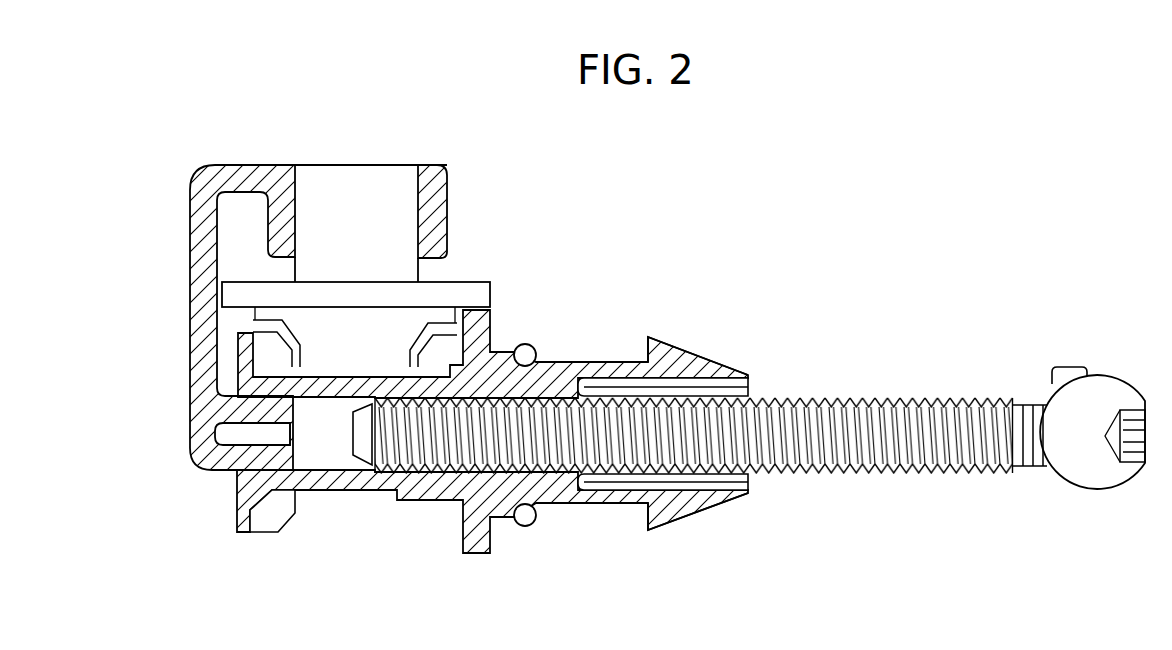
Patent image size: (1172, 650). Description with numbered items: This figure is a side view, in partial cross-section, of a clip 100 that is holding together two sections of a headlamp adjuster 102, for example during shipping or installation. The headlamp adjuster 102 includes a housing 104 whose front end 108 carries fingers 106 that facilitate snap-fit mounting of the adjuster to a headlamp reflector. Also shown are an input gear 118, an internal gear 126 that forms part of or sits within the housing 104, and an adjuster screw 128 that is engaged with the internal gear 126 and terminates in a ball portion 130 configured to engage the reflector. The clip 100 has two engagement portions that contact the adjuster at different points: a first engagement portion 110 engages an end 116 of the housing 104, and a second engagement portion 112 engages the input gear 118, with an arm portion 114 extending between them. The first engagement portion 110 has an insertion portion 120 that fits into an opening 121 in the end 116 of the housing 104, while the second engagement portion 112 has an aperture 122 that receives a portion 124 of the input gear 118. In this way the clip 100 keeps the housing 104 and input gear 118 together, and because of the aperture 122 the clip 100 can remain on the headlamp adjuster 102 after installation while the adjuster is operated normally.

The clip 100 is at (182, 204).
The headlamp adjuster 102 is at (599, 337).
The housing 104 is at (614, 526).
The fingers 106 is at (691, 356).
The front end 108 is at (750, 372).
The first engagement portion 110 is at (215, 486).
The second engagement portion 112 is at (456, 246).
The arm portion 114 is at (192, 283).
The end of the housing 116 is at (237, 518).
The input gear 118 is at (478, 268).
The insertion portion 120 is at (282, 490).
The opening 121 is at (356, 466).
The aperture 122 is at (413, 184).
The portion of the input gear 124 is at (329, 172).
The internal gear 126 is at (270, 510).
The adjuster screw 128 is at (971, 389).
The ball portion 130 is at (1106, 488).